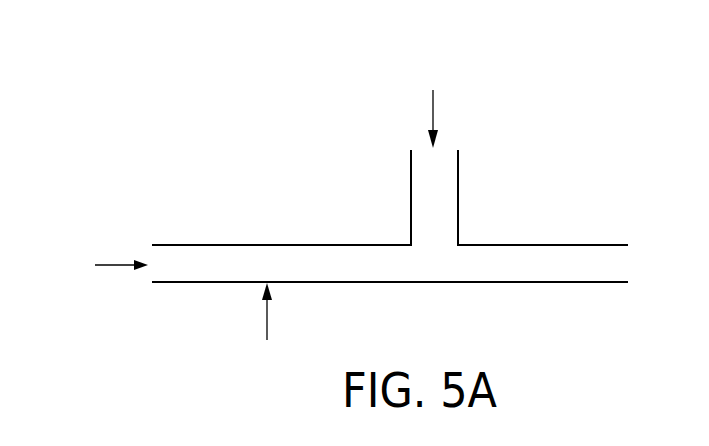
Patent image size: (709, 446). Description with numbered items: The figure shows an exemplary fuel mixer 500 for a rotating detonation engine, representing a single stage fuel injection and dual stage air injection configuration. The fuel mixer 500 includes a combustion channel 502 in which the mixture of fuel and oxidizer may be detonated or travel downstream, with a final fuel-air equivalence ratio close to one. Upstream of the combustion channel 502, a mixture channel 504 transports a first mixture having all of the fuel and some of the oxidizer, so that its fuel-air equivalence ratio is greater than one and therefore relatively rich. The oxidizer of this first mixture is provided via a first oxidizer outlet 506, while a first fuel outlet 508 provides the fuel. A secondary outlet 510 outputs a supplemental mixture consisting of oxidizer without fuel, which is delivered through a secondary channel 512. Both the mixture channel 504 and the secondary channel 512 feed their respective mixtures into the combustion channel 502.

The fuel mixer 500 is at (403, 62).
The combustion channel 502 is at (593, 258).
The mixture channel 504 is at (355, 272).
The first oxidizer outlet 506 is at (95, 265).
The first fuel outlet 508 is at (267, 325).
The secondary outlet 510 is at (433, 100).
The secondary channel 512 is at (447, 208).